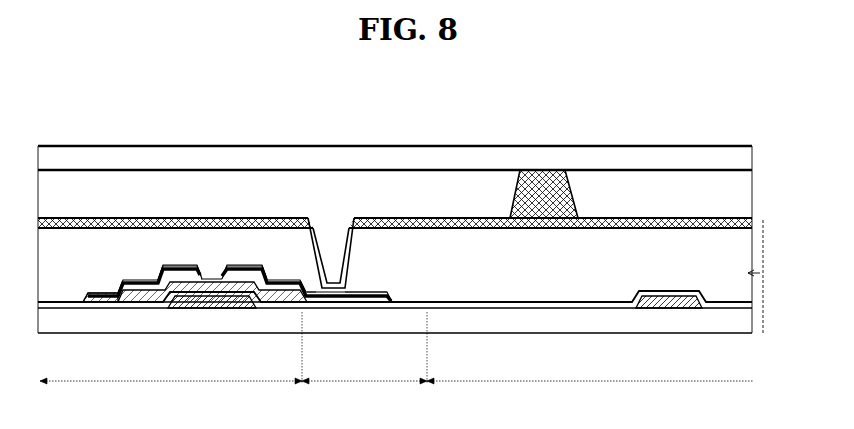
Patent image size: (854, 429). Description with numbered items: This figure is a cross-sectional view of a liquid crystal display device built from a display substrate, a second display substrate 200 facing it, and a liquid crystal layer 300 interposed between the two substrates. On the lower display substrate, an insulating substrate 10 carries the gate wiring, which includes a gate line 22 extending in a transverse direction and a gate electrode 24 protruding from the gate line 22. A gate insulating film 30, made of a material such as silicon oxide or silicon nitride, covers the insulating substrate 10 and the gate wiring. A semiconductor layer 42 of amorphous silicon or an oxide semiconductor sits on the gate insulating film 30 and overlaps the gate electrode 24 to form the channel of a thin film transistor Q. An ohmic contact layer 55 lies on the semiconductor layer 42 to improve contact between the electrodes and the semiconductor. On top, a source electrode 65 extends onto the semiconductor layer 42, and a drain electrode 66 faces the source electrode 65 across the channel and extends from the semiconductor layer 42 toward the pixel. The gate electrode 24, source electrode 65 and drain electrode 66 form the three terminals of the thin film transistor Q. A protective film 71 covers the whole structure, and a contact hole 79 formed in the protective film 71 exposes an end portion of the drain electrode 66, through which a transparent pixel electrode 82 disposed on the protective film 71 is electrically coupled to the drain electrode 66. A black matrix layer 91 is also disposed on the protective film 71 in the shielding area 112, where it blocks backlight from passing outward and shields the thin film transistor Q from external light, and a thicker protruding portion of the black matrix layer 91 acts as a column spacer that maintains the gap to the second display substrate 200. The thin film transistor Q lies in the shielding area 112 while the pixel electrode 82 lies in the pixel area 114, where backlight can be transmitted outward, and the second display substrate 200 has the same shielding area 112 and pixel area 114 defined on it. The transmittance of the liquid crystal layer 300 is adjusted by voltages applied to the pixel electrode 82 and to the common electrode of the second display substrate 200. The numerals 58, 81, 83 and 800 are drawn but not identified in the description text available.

The insulating substrate 10 is at (400, 322).
The gate line 22 is at (666, 309).
The gate electrode 24 is at (206, 309).
The gate insulating film 30 is at (458, 307).
The semiconductor layer 42 is at (157, 309).
The ohmic contact layer 55 is at (133, 309).
The drain electrode 58 is at (262, 309).
The source electrode 65 is at (177, 270).
The drain electrode 66 is at (244, 267).
The thin film transistor Q is at (259, 238).
The protective film 71 is at (61, 243).
The contact hole 79 is at (330, 247).
The pixel electrode 82 is at (376, 222).
The electrode layer 81 is at (640, 217).
The black matrix layer 91 is at (112, 217).
The spacer / bank 83 is at (515, 192).
The second display substrate 200 is at (365, 153).
The liquid crystal layer 300 is at (412, 182).
The display panel 800 is at (768, 276).
The shielding area 112 is at (396, 355).
The pixel area 114 is at (364, 388).